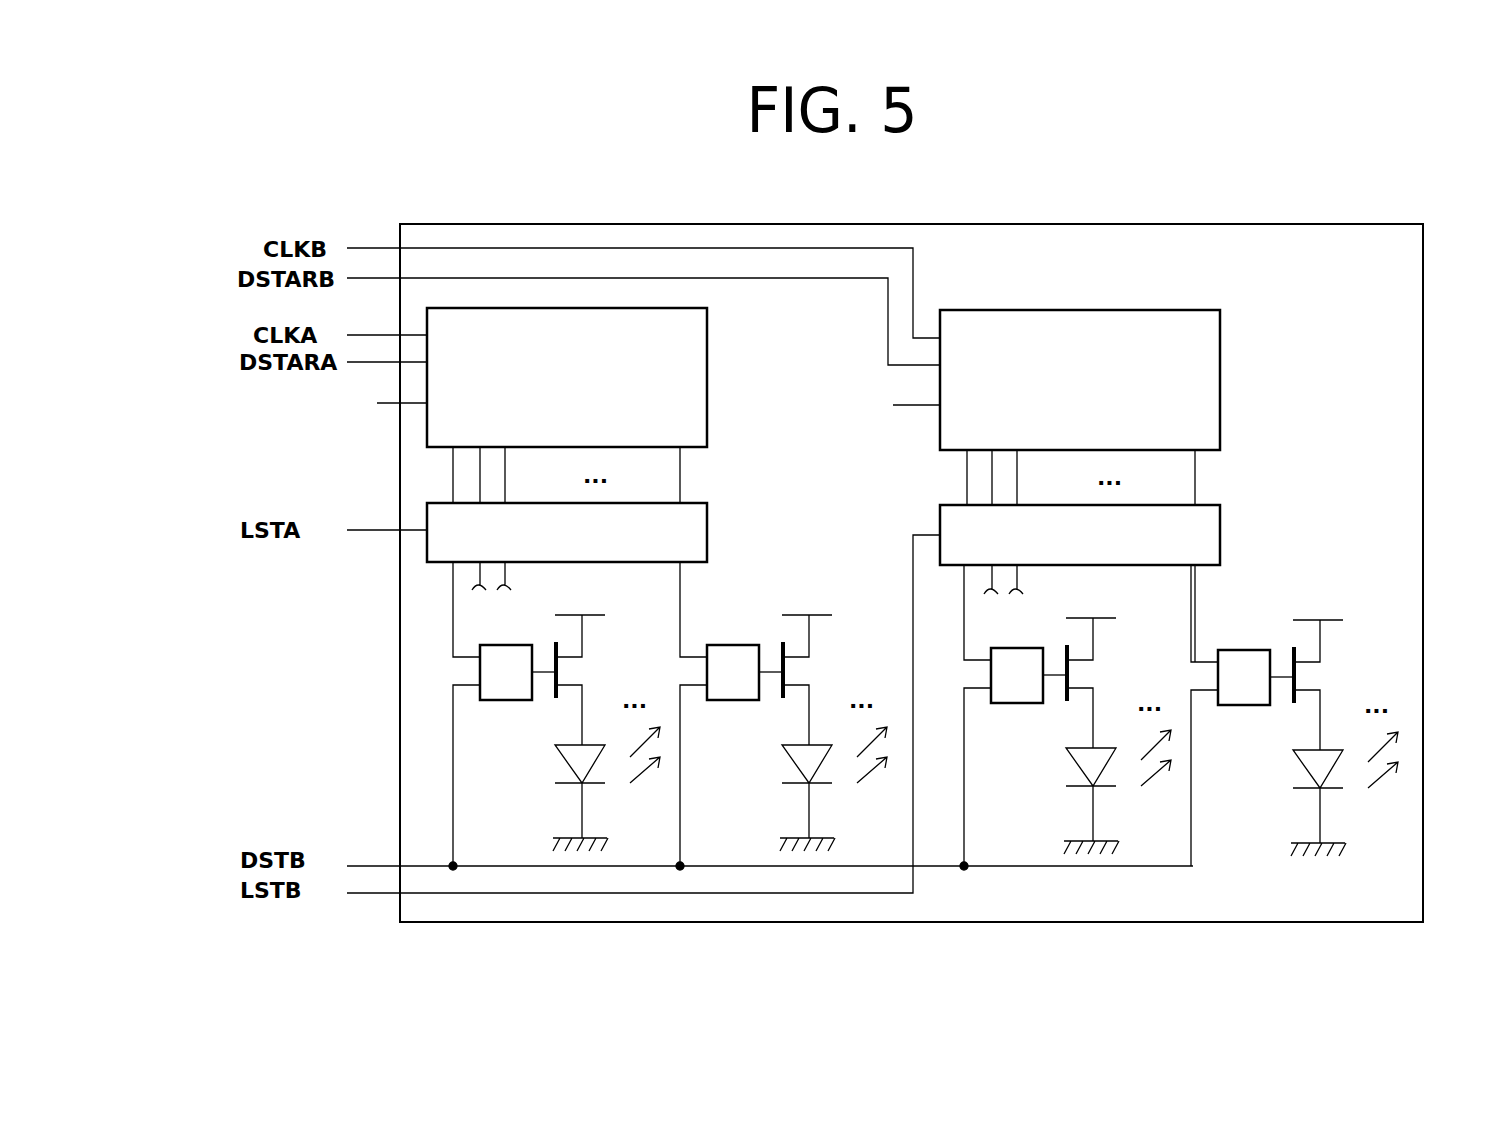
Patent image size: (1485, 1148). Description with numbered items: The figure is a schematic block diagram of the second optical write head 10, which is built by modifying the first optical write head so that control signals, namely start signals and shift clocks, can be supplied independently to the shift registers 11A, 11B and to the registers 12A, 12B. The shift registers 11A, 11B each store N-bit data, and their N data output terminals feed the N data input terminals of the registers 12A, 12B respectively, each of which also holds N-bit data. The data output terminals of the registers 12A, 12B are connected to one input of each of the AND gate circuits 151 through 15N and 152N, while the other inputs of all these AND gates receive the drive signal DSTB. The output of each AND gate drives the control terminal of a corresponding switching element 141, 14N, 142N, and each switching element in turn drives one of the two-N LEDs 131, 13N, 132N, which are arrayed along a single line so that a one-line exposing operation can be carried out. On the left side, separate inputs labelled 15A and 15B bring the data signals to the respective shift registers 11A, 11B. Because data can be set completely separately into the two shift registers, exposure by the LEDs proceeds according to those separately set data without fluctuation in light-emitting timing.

The second optical write head 10 is at (1312, 224).
The shift register 11A is at (707, 335).
The shift register 11B is at (1220, 330).
The register 12A is at (707, 527).
The register 12B is at (1220, 527).
The LED 131 is at (560, 762).
The LED 13N is at (797, 789).
The LED 132N is at (1307, 794).
The switching element 141 is at (590, 668).
The switching element 14N is at (833, 679).
The switching element 142N is at (1344, 685).
The AND gate circuit 151 is at (517, 700).
The AND gate circuit 15N is at (737, 699).
The AND gate circuit 152N is at (1247, 703).
The data input DATA00A 15A is at (328, 404).
The data input DATA00B 15B is at (840, 404).